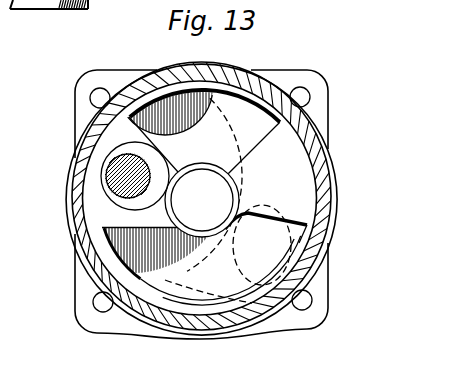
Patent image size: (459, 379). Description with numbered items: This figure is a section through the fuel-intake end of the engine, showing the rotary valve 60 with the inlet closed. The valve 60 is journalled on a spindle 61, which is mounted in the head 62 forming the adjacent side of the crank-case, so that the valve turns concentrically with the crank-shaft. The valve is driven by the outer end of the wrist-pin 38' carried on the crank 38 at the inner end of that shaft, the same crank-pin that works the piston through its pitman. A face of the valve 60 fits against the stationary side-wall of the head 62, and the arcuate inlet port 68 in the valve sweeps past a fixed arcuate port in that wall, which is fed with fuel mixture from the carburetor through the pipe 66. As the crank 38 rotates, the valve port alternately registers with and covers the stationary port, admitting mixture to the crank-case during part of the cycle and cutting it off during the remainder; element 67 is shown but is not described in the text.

The crank 38 is at (213, 198).
The wrist-pin 38' is at (86, 176).
The rotary valve 60 is at (98, 222).
The spindle 61 is at (202, 200).
The head 62 is at (128, 325).
The pipe 66 is at (228, 254).
The rotor lobe 67 is at (300, 243).
The arcuate inlet port 68 is at (240, 99).